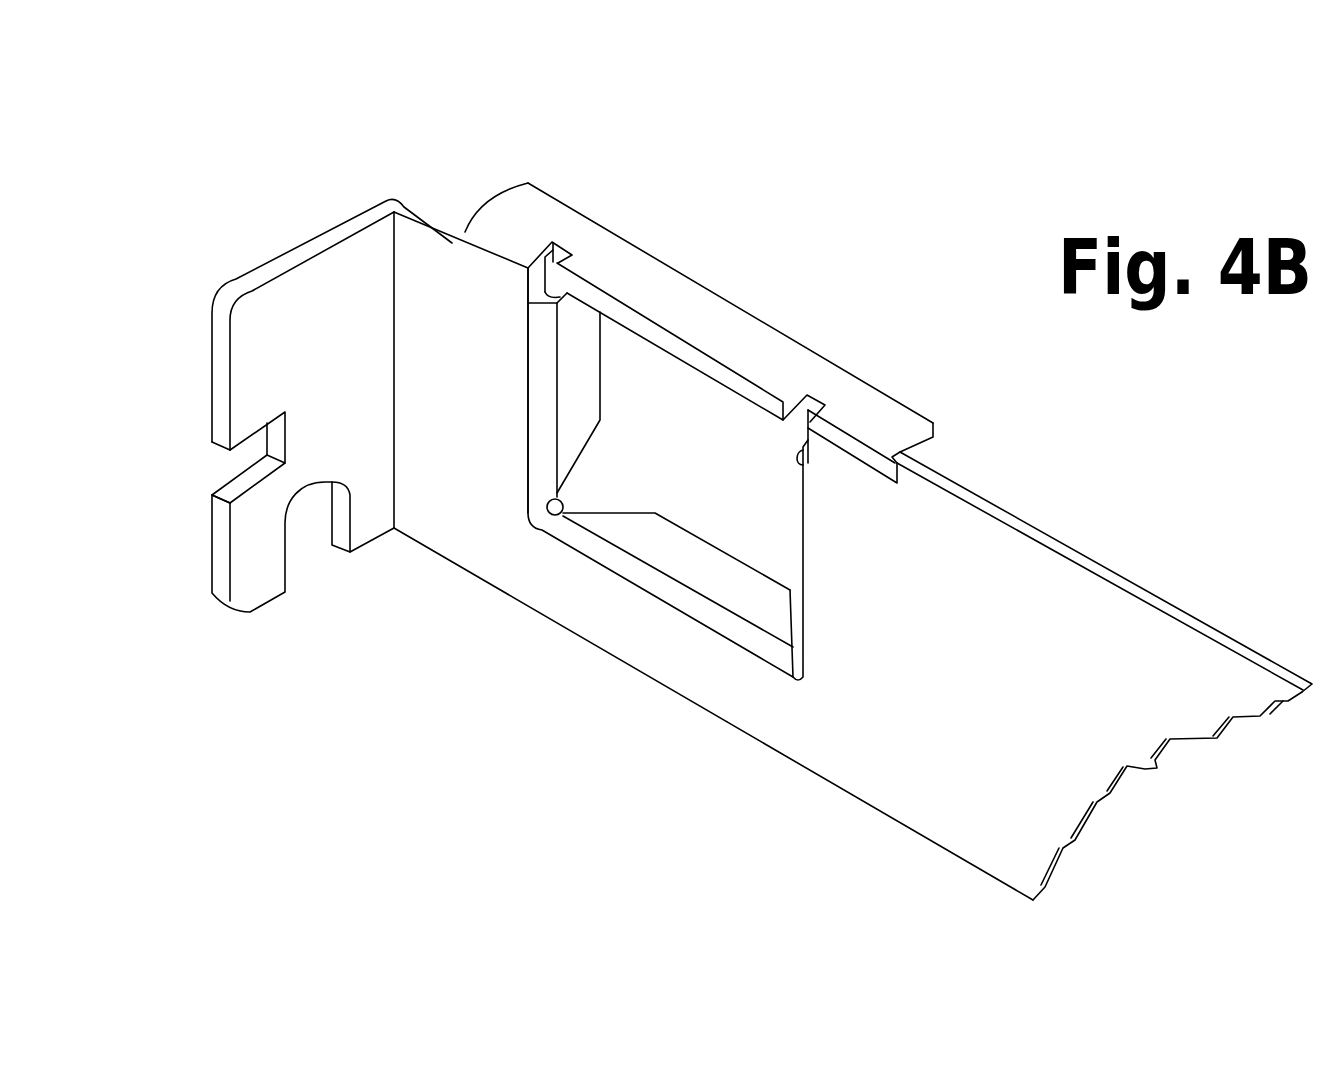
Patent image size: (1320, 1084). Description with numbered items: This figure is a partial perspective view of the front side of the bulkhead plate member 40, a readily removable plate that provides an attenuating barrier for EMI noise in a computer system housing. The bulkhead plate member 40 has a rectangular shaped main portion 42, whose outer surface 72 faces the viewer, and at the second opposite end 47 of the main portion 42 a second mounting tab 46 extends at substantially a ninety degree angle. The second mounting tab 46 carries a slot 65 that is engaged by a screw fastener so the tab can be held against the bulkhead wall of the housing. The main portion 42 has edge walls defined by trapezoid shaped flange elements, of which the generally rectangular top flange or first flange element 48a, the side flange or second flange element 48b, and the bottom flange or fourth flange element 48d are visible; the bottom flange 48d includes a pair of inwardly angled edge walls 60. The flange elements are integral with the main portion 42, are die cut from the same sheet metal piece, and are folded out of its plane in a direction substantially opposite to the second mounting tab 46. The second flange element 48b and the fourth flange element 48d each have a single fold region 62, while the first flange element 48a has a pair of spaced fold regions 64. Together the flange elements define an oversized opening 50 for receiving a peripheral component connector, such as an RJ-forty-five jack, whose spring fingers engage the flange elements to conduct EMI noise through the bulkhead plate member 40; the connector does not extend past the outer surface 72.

The bulkhead plate member 40 is at (1092, 540).
The main portion 42 is at (920, 775).
The second mounting tab 46 is at (300, 292).
The second opposite end 47 is at (423, 248).
The first flange element 48a is at (753, 343).
The second flange element 48b is at (583, 402).
The fourth flange element 48d is at (700, 563).
The oversized opening 50 is at (717, 433).
The inwardly angled edge walls 60 is at (607, 512).
The single fold region 62 is at (538, 389).
The spaced fold regions 64 is at (502, 250).
The slot 65 is at (232, 490).
The outer surface 72 is at (1167, 703).